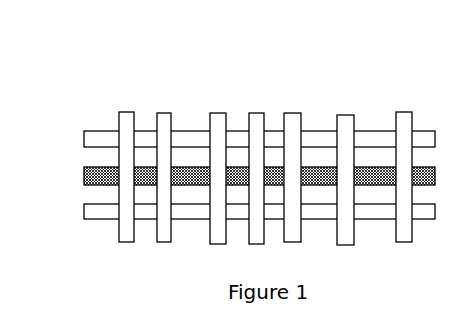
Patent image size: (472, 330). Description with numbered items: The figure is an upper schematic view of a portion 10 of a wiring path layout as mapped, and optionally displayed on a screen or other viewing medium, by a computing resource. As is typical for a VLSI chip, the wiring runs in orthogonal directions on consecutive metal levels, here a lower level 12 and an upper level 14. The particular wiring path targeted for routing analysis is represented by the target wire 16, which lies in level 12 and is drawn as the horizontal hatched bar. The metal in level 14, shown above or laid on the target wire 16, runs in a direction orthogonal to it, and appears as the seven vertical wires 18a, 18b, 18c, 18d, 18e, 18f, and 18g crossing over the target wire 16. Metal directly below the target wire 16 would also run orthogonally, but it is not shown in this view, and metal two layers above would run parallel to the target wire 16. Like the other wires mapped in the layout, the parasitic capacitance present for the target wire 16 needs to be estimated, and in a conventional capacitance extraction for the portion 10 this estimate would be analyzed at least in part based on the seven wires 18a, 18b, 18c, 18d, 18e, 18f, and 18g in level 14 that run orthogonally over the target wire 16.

The portion of a wiring path layout 10 is at (347, 55).
The metal level 12 is at (102, 155).
The metal level 14 is at (147, 232).
The target wire 16 is at (357, 183).
The wire 18a is at (133, 113).
The wire 18b is at (162, 115).
The wire 18c is at (223, 118).
The wire 18d is at (254, 118).
The wire 18e is at (292, 117).
The wire 18f is at (348, 113).
The wire 18g is at (405, 120).